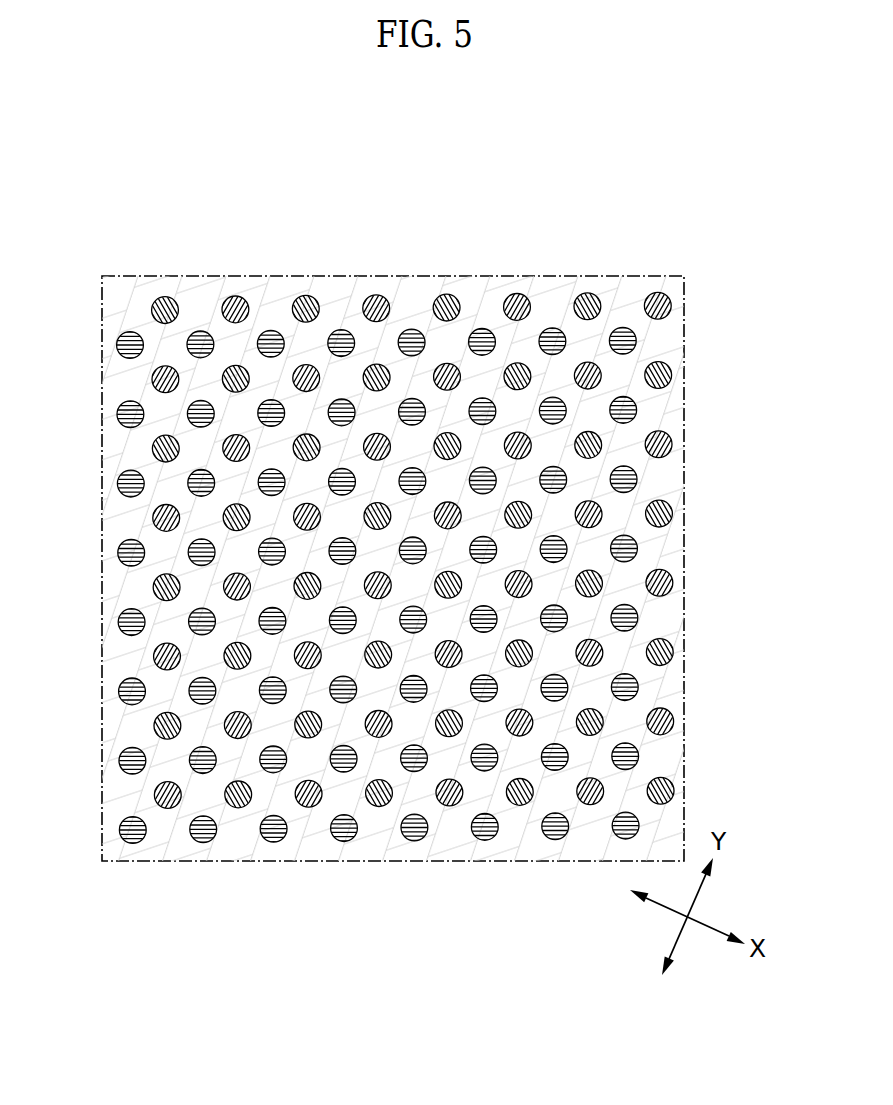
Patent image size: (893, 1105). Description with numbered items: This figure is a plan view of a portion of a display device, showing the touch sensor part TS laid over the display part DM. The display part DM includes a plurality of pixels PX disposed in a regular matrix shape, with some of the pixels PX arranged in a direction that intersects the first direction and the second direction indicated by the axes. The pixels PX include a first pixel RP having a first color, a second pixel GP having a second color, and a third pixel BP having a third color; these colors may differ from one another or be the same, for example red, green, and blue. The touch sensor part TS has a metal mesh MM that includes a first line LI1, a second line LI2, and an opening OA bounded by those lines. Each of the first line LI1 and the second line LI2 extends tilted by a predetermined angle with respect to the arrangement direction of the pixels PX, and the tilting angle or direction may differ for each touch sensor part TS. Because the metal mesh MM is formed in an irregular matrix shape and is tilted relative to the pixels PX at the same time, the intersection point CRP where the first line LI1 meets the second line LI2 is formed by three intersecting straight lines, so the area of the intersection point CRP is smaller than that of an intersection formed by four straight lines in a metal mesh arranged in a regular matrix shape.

The touch sensor part TS is at (393, 484).
The display part DM is at (393, 568).
The intersection point CRP is at (376, 411).
The metal mesh MM is at (402, 568).
The pixel PX is at (406, 514).
The first pixel RP is at (586, 293).
The second pixel GP is at (623, 327).
The third pixel BP is at (567, 219).
The first line LI1 is at (580, 422).
The second line LI2 is at (593, 485).
The opening OA is at (613, 654).